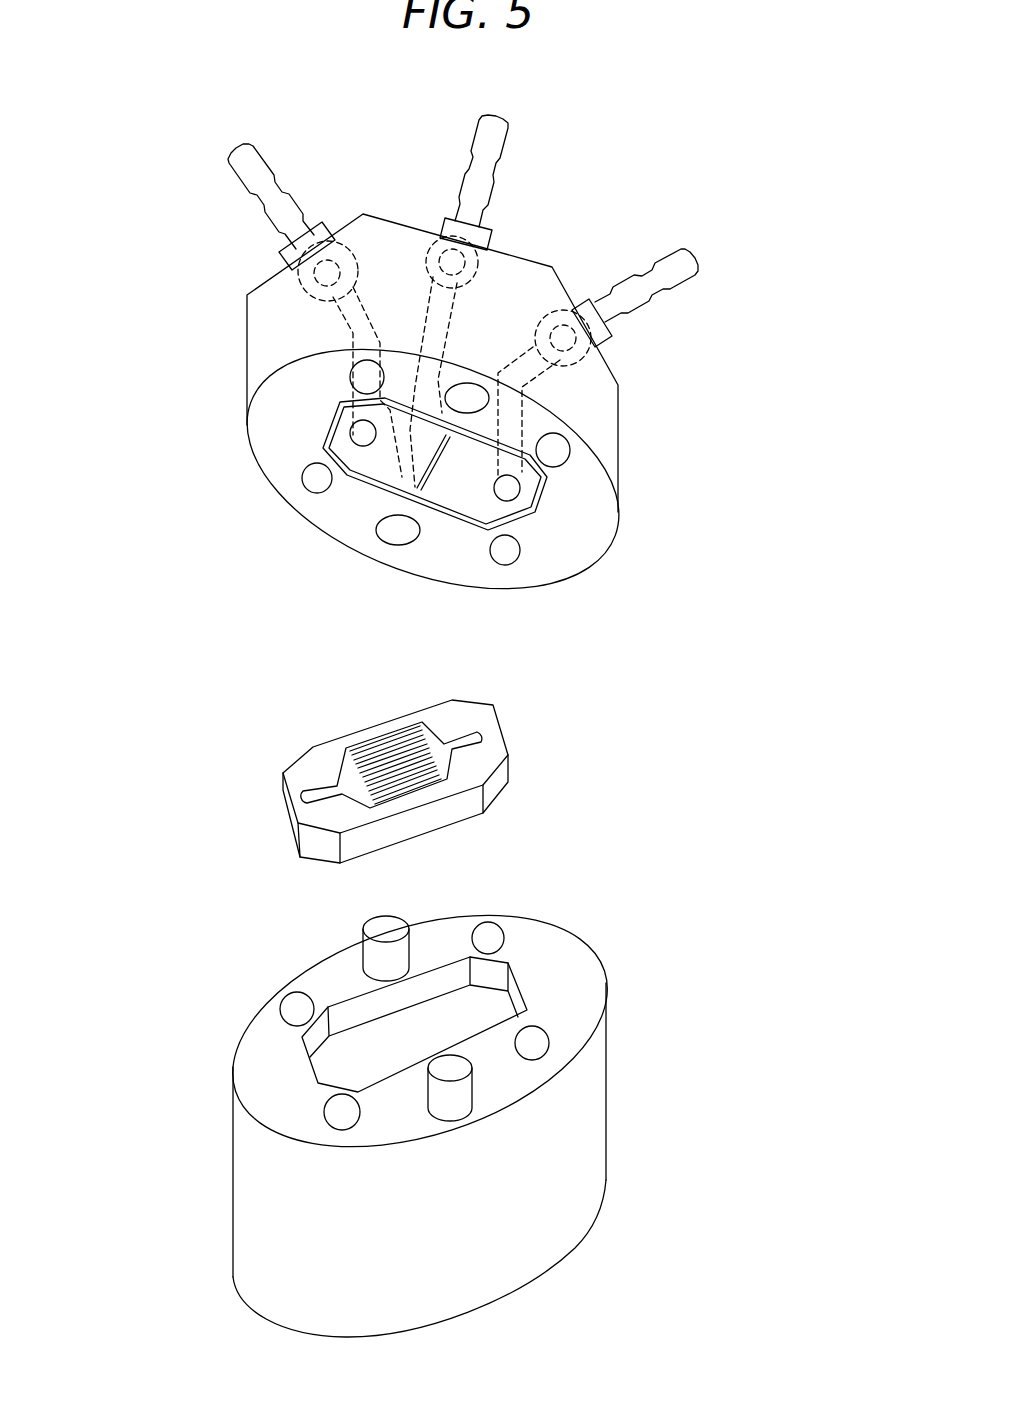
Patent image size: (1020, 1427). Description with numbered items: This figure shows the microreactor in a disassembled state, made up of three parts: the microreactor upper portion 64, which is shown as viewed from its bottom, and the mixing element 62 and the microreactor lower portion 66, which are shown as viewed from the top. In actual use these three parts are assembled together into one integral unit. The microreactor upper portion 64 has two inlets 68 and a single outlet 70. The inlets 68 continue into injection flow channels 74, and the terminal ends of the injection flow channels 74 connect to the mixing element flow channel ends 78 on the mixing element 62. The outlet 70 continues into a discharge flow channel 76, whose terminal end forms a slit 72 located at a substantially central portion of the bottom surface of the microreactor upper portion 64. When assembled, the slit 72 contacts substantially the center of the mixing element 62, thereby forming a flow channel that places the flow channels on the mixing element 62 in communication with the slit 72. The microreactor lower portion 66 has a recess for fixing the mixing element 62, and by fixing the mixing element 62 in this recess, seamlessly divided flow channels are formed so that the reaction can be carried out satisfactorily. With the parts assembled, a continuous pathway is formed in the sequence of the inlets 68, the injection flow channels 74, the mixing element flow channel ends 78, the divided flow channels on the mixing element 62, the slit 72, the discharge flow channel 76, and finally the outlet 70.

The mixing element 62 is at (457, 808).
The microreactor upper portion 64 is at (593, 442).
The microreactor lower portion 66 is at (577, 1200).
The inlets 68 is at (238, 166).
The outlet 70 is at (505, 137).
The slit 72 is at (413, 490).
The injection flow channels 74 is at (367, 333).
The discharge flow channel 76 is at (457, 300).
The mixing element flow channel ends 78 is at (487, 735).